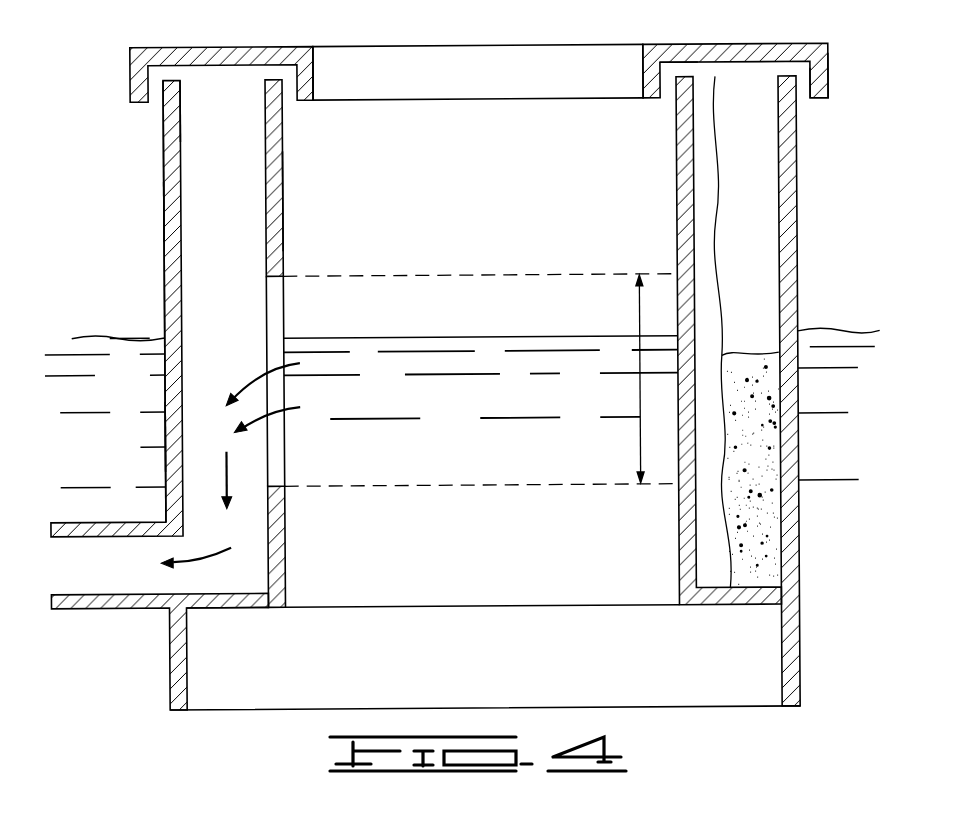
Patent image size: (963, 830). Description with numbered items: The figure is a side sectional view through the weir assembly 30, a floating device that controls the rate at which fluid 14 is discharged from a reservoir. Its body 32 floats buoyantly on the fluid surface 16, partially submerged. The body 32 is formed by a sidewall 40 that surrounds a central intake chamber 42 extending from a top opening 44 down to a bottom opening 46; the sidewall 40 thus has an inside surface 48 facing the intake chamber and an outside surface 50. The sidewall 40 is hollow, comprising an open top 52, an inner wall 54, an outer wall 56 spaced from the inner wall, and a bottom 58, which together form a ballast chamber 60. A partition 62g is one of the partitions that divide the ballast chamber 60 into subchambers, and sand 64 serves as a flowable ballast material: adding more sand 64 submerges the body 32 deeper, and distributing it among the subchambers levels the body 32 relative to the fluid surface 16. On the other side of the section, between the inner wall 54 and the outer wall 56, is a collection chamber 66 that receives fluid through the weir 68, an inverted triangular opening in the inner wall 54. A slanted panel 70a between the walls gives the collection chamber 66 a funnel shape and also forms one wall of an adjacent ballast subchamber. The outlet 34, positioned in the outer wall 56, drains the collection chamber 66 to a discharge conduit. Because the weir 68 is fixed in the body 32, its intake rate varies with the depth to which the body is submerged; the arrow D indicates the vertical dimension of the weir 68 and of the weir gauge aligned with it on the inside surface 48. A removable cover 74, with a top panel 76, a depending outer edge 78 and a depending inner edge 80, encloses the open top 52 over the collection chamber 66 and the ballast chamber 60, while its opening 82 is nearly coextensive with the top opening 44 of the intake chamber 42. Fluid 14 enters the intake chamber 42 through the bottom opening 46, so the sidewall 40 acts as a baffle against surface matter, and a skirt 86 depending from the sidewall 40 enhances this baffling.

The fluid 14 is at (114, 388).
The fluid surface 16 is at (151, 336).
The weir assembly 30 is at (130, 68).
The body 32 is at (161, 204).
The outlet 34 is at (133, 581).
The sidewall 40 is at (165, 240).
The central intake chamber 42 is at (484, 236).
The top opening 44 is at (284, 142).
The bottom opening 46 is at (285, 571).
The inside surface 48 is at (284, 177).
The outside surface 50 is at (165, 280).
The open top 52 is at (182, 108).
The inner wall 54 is at (284, 216).
The outer wall 56 is at (165, 435).
The bottom 58 is at (216, 609).
The ballast chamber 60 is at (766, 175).
The partition 62g is at (711, 428).
The sand 64 is at (754, 480).
The collection chamber 66 is at (237, 199).
The weir 68 is at (276, 316).
The slanted panel 70a is at (249, 466).
The cover 74 is at (757, 46).
The top panel 76 is at (702, 46).
The depending outer edge 78 is at (828, 78).
The depending inner edge 80 is at (645, 80).
The opening 82 is at (315, 81).
The skirt 86 is at (799, 637).
The vertical dimension D is at (636, 389).